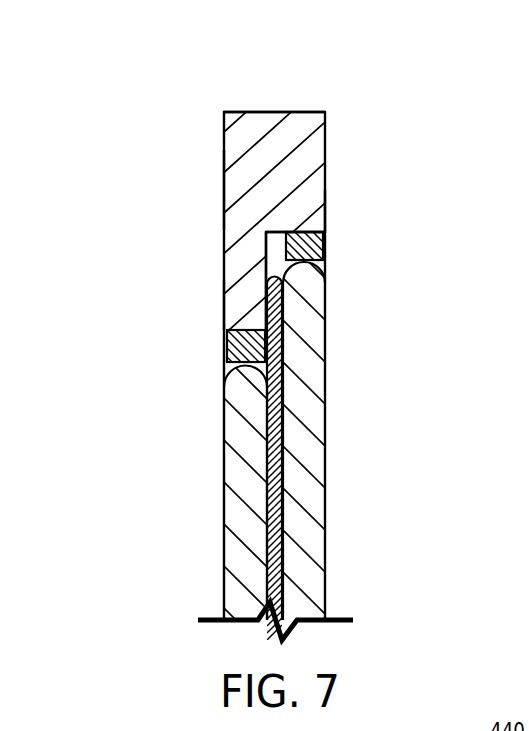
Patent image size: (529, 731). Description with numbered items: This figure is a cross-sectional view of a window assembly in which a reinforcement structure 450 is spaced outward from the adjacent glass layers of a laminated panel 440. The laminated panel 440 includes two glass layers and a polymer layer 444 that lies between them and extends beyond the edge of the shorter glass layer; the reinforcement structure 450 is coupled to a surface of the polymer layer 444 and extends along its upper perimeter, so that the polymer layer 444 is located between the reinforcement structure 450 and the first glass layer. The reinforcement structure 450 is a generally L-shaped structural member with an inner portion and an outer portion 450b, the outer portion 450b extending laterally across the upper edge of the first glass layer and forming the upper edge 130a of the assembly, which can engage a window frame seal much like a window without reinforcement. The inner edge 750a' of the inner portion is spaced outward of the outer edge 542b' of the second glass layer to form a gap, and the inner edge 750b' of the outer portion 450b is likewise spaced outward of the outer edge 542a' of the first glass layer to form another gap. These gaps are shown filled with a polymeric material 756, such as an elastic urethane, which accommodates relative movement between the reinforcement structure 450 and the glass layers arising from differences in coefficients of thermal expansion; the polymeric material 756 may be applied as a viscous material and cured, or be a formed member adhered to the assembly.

The upper edge 130a is at (270, 111).
The reinforcement structure 450 is at (190, 119).
The outer portion 450b is at (226, 185).
The inner edge of the outer portion 750b' is at (358, 197).
The inner edge of the inner portion 750a' is at (194, 281).
The polymeric material 756 is at (326, 248).
The outer edge of the first glass layer 542a' is at (359, 303).
The outer edge of the second glass layer 542b' is at (190, 404).
The polymer layer 444 is at (285, 478).
The laminated panel 440 is at (156, 490).